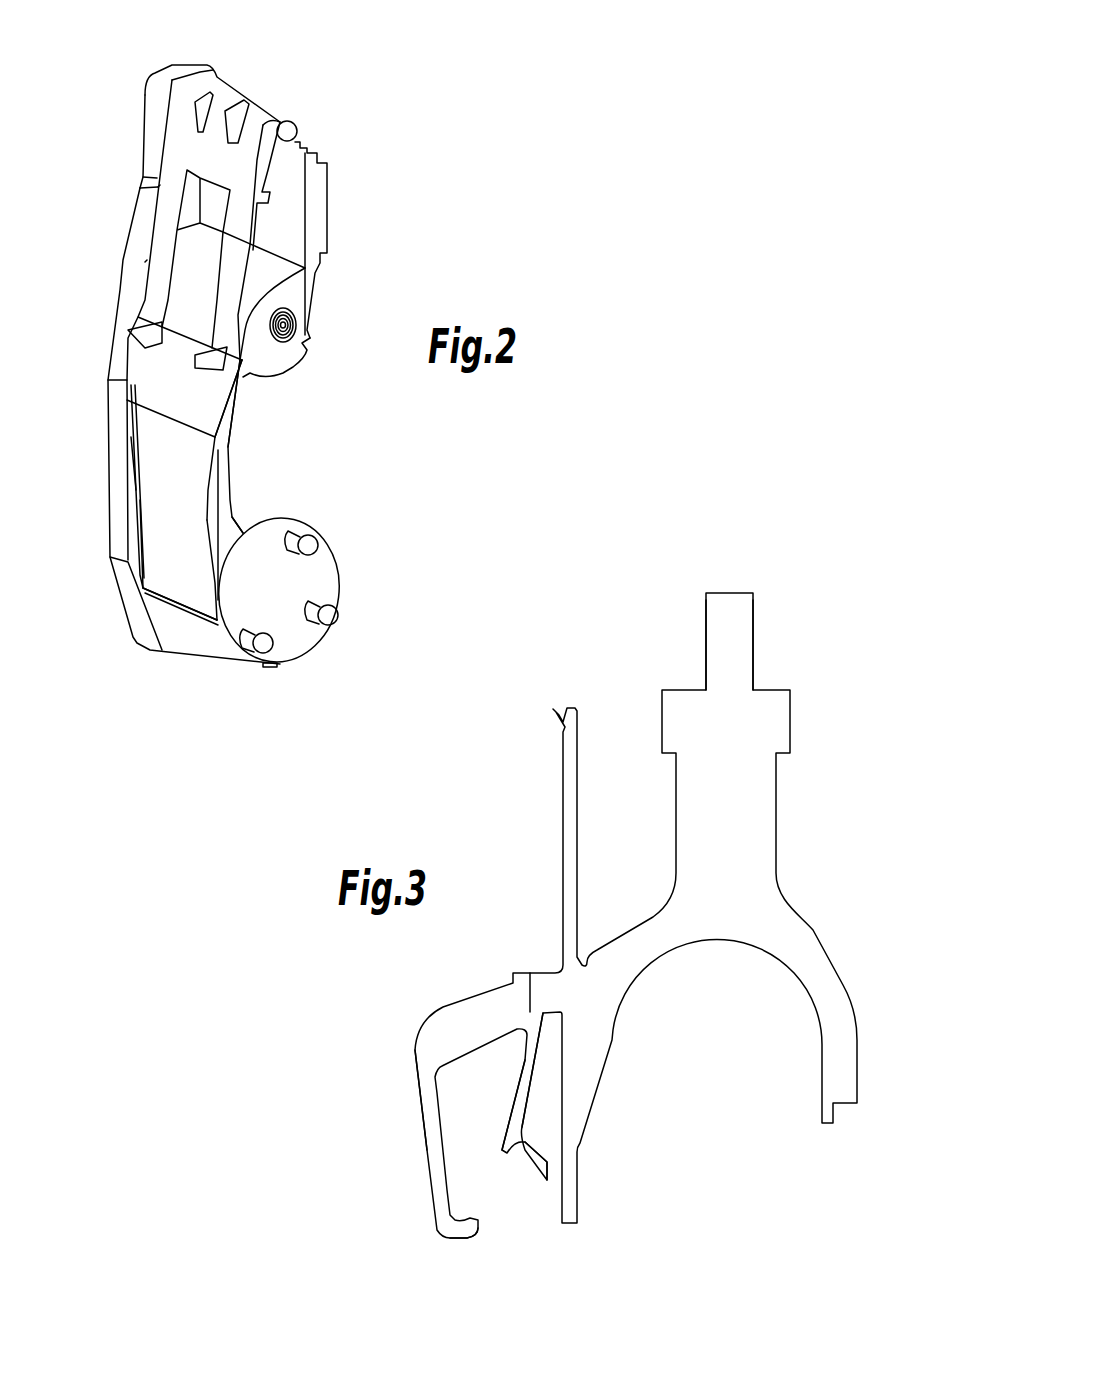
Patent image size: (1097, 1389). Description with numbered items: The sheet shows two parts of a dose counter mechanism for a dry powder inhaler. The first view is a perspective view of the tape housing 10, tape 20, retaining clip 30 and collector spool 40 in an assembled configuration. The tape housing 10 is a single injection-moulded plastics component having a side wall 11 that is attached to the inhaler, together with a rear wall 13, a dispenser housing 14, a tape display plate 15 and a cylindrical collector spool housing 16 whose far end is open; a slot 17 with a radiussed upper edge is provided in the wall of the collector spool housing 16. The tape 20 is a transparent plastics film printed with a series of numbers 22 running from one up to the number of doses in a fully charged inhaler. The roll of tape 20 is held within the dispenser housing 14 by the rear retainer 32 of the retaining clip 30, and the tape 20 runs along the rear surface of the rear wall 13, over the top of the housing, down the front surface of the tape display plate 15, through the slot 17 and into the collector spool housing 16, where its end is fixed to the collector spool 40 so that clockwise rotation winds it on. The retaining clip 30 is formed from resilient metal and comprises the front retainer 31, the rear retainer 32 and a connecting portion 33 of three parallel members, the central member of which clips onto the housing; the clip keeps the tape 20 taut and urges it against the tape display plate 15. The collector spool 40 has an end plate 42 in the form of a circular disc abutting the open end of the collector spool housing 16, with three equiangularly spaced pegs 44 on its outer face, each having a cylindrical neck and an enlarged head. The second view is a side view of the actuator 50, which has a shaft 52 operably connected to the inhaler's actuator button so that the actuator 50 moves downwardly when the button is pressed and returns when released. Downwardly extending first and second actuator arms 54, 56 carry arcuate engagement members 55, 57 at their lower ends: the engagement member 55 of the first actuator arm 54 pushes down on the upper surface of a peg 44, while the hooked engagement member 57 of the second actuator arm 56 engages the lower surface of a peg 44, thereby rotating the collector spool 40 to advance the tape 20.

In FIG. 2, the tape housing 10 is at (84, 326).
In FIG. 2, the side wall 11 is at (148, 88).
In FIG. 2, the rear wall 13 is at (322, 205).
In FIG. 2, the dispenser housing 14 is at (292, 355).
In FIG. 2, the tape display plate 15 is at (226, 452).
In FIG. 2, the collector spool housing 16 is at (240, 527).
In FIG. 2, the slot 17 is at (200, 624).
In FIG. 2, the tape 20 is at (158, 527).
In FIG. 2, the numbers 22 is at (190, 495).
In FIG. 2, the retaining clip 30 is at (233, 205).
In FIG. 2, the front retainer 31 is at (160, 205).
In FIG. 2, the rear retainer 32 is at (300, 325).
In FIG. 2, the connecting portion 33 is at (224, 98).
In FIG. 2, the collector spool 40 is at (312, 620).
In FIG. 2, the end plate 42 is at (298, 640).
In FIG. 2, the pegs 44 is at (318, 548).
In FIG. 3, the actuator 50 is at (609, 942).
In FIG. 3, the shaft 52 is at (745, 633).
In FIG. 3, the first actuator arm 54 is at (520, 1104).
In FIG. 3, the engagement member 55 is at (533, 1158).
In FIG. 3, the second actuator arm 56 is at (430, 1158).
In FIG. 3, the engagement member 57 is at (455, 1238).